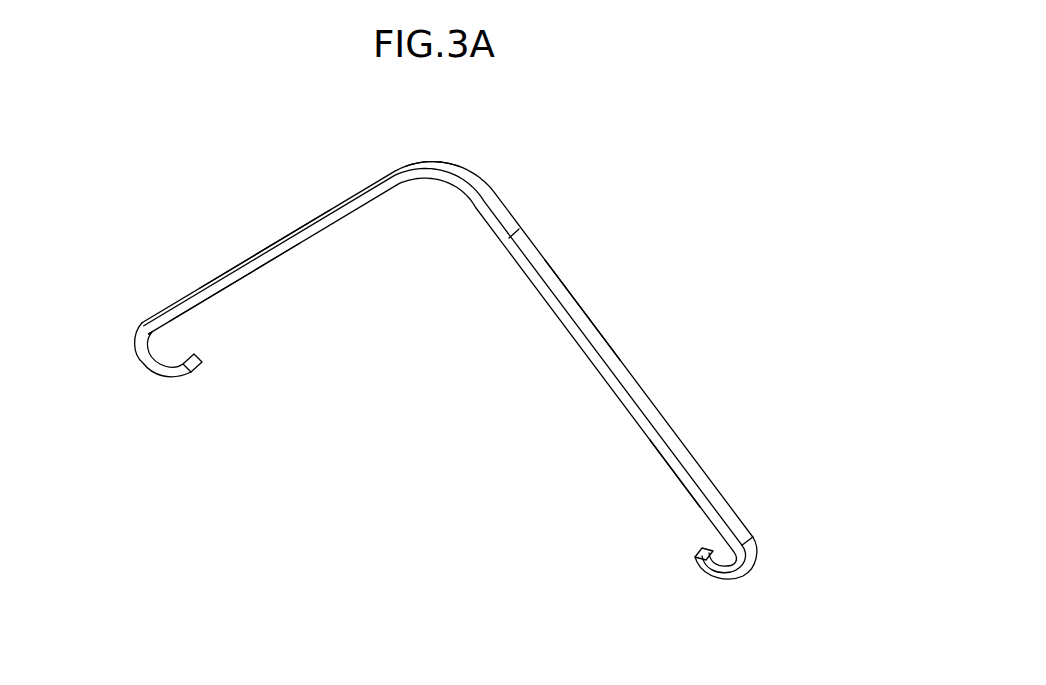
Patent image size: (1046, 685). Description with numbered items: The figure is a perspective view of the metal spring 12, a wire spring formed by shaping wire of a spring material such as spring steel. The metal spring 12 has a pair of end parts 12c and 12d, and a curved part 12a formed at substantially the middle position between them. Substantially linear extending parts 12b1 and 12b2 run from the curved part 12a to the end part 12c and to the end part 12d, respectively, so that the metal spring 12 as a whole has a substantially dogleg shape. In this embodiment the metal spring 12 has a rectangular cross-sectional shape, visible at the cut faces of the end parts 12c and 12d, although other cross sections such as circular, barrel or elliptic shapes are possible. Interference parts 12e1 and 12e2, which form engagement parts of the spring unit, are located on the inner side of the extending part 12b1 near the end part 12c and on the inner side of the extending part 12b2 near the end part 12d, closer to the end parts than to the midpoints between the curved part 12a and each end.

The metal spring 12 is at (648, 136).
The curved part 12a is at (440, 170).
The extending part 12b1 is at (322, 222).
The extending part 12b2 is at (596, 347).
The end part 12c is at (148, 362).
The end part 12d is at (727, 579).
The interference part 12e1 is at (198, 305).
The interference part 12e2 is at (687, 488).